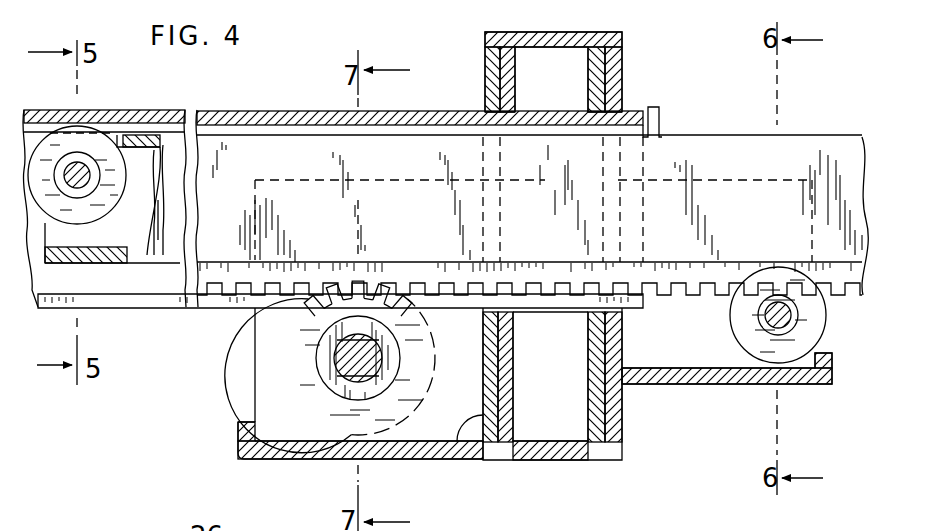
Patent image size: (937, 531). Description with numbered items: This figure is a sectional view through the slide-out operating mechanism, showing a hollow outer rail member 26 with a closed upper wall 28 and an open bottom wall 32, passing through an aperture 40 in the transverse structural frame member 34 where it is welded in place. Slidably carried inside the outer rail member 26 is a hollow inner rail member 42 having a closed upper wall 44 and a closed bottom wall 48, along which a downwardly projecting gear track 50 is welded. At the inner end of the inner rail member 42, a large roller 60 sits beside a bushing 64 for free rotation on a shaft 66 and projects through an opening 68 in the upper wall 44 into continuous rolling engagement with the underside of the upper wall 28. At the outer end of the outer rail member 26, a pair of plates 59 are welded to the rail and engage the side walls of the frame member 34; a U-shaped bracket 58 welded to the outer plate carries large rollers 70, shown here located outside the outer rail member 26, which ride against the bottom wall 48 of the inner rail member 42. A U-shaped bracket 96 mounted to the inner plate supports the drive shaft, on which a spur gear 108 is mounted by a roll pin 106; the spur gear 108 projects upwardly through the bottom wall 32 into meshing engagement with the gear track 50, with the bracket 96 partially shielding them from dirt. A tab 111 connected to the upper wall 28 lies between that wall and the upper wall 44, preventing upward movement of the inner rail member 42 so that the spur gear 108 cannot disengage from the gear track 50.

The outer rail member 26 is at (297, 110).
The upper wall 28 is at (256, 112).
The bottom wall 32 is at (165, 300).
The structural frame member 34 is at (583, 33).
The aperture 40 is at (484, 111).
The inner rail member 42 is at (170, 146).
The upper wall 44 is at (143, 143).
The bottom wall 48 is at (738, 267).
The gear track 50 is at (242, 293).
The U-shaped bracket 58 is at (708, 386).
The plates 59 is at (476, 443).
The large roller 60 is at (82, 148).
The bushing 64 is at (99, 182).
The shaft 66 is at (79, 187).
The opening 68 is at (120, 143).
The large rollers 70 is at (800, 342).
The U-shaped bracket 96 is at (412, 460).
The roll pin 106 is at (348, 382).
The spur gear 108 is at (302, 330).
The tab 111 is at (662, 118).